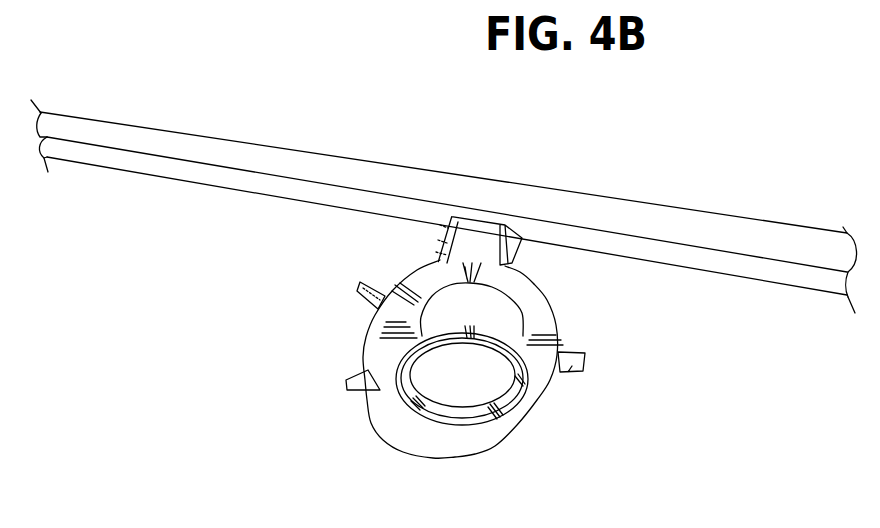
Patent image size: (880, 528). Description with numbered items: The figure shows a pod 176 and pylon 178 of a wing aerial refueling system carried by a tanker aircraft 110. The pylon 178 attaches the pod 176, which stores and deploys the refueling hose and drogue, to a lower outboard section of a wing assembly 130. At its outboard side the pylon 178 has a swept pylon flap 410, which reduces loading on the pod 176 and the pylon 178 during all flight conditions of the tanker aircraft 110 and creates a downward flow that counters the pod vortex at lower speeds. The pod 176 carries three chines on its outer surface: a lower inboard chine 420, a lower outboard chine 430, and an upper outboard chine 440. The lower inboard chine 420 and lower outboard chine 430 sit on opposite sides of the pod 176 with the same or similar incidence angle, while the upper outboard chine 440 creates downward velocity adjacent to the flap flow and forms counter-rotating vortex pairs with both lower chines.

The tanker aircraft 110 is at (444, 196).
The wing assembly 130 is at (405, 165).
The pod 176 is at (470, 455).
The pylon 178 is at (510, 257).
The swept pylon flap 410 is at (484, 260).
The lower inboard chine 420 is at (583, 362).
The lower outboard chine 430 is at (347, 380).
The upper outboard chine 440 is at (358, 285).